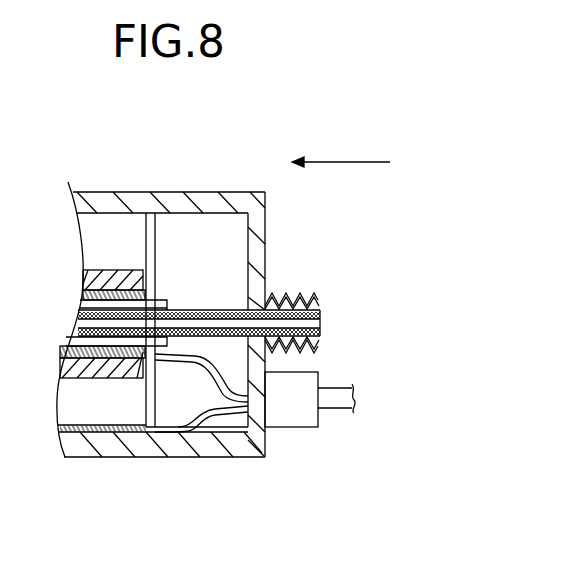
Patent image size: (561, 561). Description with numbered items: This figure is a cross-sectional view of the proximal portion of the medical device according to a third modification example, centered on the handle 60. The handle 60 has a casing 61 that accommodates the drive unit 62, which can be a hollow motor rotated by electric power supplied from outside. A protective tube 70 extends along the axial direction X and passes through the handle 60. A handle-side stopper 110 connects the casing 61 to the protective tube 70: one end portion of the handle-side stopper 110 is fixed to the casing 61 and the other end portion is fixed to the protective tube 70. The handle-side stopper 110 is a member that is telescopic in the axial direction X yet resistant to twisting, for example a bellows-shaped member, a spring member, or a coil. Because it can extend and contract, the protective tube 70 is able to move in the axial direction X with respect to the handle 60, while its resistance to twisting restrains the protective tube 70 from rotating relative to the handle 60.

The handle 60 is at (168, 192).
The casing 61 is at (250, 192).
The drive unit 62 is at (95, 268).
The protective tube 70 is at (205, 345).
The handle-side stopper 110 is at (310, 293).
The axial direction X is at (340, 162).